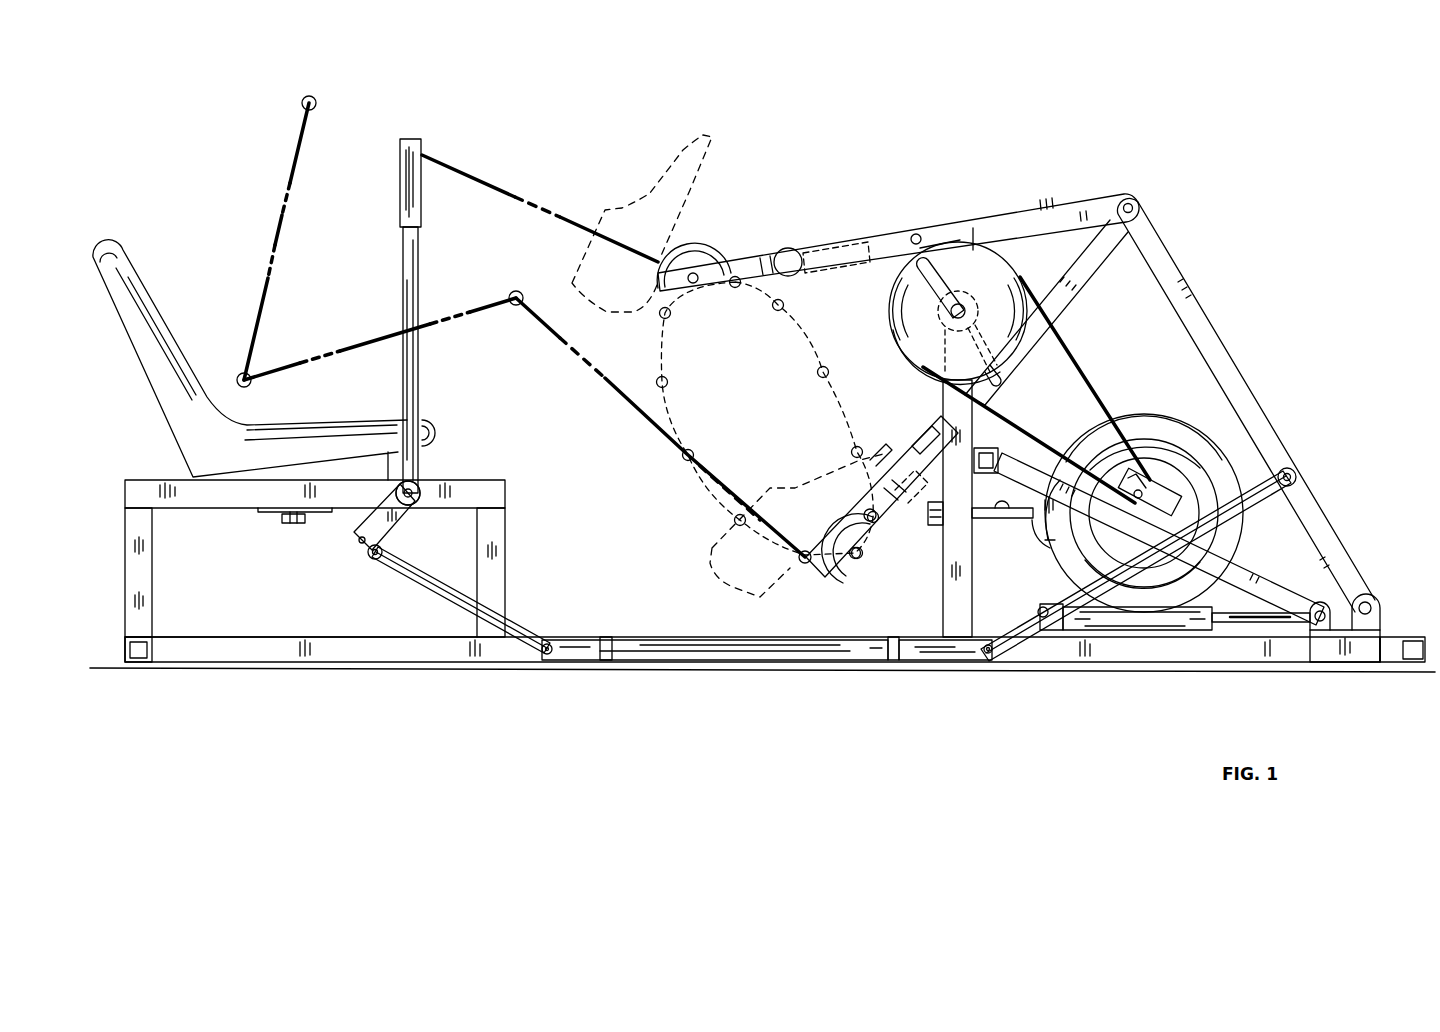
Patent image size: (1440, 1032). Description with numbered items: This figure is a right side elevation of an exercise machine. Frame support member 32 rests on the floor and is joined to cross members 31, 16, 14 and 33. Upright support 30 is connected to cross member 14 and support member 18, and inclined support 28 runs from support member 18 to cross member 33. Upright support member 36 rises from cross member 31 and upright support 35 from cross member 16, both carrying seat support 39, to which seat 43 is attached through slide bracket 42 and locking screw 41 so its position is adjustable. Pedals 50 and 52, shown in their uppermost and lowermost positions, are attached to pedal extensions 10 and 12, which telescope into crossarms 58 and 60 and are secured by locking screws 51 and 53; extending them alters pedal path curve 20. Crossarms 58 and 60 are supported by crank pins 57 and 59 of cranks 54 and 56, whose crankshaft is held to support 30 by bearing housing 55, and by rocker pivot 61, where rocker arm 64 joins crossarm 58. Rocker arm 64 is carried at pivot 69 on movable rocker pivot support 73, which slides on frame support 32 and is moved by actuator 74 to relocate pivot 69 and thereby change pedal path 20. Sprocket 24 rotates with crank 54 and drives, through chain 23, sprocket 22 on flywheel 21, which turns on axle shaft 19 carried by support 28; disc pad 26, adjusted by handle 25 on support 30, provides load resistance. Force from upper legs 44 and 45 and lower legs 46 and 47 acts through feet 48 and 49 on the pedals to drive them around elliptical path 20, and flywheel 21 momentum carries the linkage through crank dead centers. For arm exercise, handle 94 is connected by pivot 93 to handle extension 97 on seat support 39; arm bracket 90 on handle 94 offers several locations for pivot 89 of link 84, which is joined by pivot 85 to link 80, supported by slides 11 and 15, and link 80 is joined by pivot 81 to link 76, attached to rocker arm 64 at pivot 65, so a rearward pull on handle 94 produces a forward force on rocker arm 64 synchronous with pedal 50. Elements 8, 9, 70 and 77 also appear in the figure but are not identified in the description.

The pivot hole 8 is at (358, 545).
The bracket 9 is at (1002, 518).
The pedal extension 10 is at (745, 280).
The slide 11 is at (606, 655).
The pedal extension 12 is at (862, 560).
The cross member 14 is at (945, 655).
The slide 15 is at (893, 655).
The cross member 16 is at (487, 655).
The support member 18 is at (998, 450).
The axle shaft 19 is at (1130, 490).
The pedal path curve 20 is at (810, 340).
The flywheel 21 is at (1140, 420).
The sprocket 22 is at (1143, 482).
The chain 23 is at (1065, 345).
The sprocket 24 is at (968, 270).
The handle 25 is at (935, 520).
The disc pad 26 is at (1050, 545).
The inclined support 28 is at (1240, 580).
The upright support 30 is at (943, 598).
The cross member 31 is at (135, 645).
The frame support member 32 is at (330, 635).
The cross member 33 is at (1410, 665).
The upright support 35 is at (505, 545).
The upright support member 36 is at (152, 575).
The seat support 39 is at (165, 500).
The locking screw 41 is at (295, 528).
The slide bracket 42 is at (278, 512).
The seat 43 is at (125, 253).
The upper leg 44 is at (290, 175).
The upper leg 45 is at (380, 338).
The lower leg 46 is at (460, 175).
The lower leg 47 is at (605, 375).
The foot 48 is at (665, 160).
The foot 49 is at (830, 470).
The pedal 50 is at (695, 248).
The locking screw 51 is at (795, 252).
The pedal 52 is at (835, 575).
The locking screw 53 is at (915, 445).
The crank 54 is at (935, 283).
The bearing housing 55 is at (912, 323).
The crank 56 is at (930, 358).
The crank pin 57 is at (913, 233).
The crossarm 58 is at (937, 245).
The crank pin 59 is at (998, 380).
The crossarm 60 is at (1080, 280).
The rocker pivot 61 is at (1118, 205).
The rocker arm 64 is at (1200, 305).
The pivot 65 is at (1290, 472).
The pivot 69 is at (1365, 600).
The base block 70 is at (1345, 665).
The movable rocker pivot support 73 is at (1322, 612).
The actuator 74 is at (1120, 635).
The link 76 is at (1150, 560).
The pivot 77 is at (1045, 640).
The link 80 is at (760, 650).
The pivot 81 is at (987, 655).
The link 84 is at (440, 585).
The pivot 85 is at (545, 655).
The pivot 89 is at (372, 558).
The arm bracket 90 is at (398, 530).
The pivot 93 is at (415, 486).
The handle 94 is at (403, 255).
The handle extension 97 is at (420, 494).